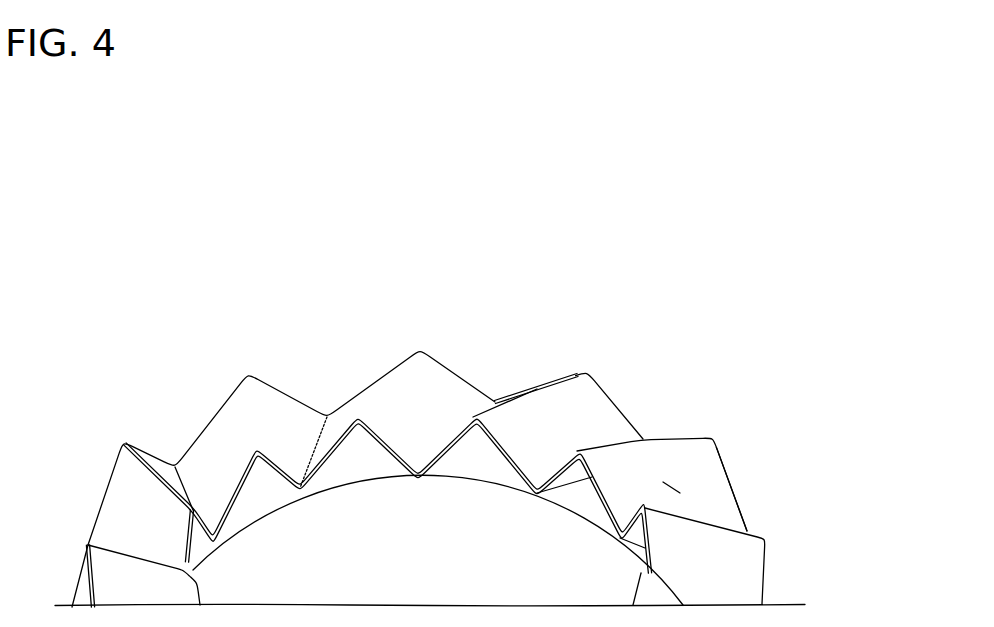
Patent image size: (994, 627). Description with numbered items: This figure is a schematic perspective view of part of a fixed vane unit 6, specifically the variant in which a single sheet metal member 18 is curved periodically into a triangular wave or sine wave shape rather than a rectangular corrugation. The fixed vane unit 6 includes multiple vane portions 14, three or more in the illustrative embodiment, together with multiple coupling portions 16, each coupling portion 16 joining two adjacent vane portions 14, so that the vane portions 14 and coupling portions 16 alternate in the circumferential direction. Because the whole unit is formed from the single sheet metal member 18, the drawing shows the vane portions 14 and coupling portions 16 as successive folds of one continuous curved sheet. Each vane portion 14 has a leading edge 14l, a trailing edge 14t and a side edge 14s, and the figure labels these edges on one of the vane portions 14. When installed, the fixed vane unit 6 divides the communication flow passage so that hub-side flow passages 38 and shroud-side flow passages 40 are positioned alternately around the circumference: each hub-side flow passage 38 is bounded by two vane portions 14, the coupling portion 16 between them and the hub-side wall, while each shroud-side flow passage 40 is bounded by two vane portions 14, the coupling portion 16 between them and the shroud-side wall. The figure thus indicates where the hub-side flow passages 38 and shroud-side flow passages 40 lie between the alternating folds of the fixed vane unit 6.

The fixed vane unit 6 is at (575, 246).
The vane portion 14 is at (222, 420).
The coupling portion 16 is at (257, 452).
The hub-side flow passage 38 is at (255, 503).
The shroud-side flow passage 40 is at (320, 367).
The leading edge 14l is at (737, 493).
The side edge 14s is at (663, 482).
The trailing edge 14t is at (592, 477).
The single sheet metal member 18 is at (742, 565).